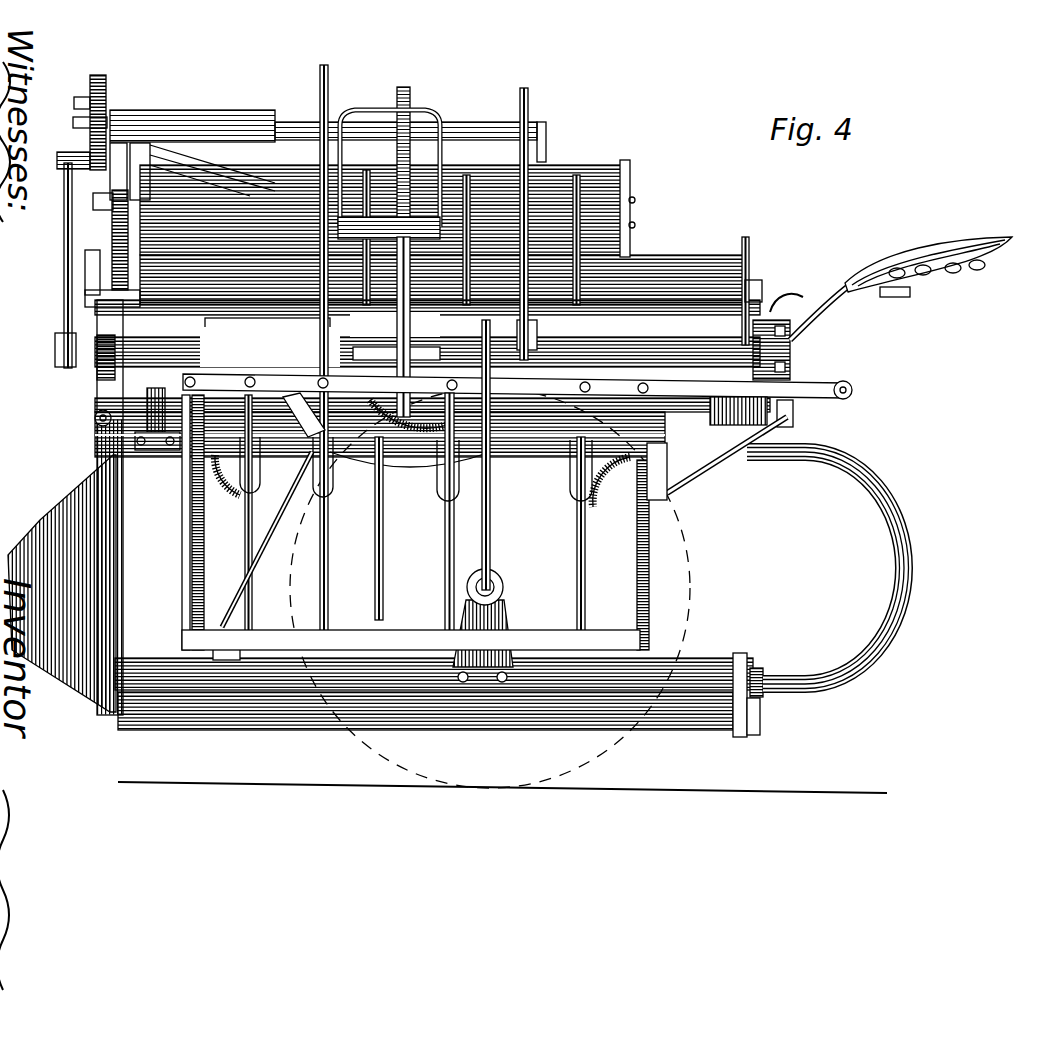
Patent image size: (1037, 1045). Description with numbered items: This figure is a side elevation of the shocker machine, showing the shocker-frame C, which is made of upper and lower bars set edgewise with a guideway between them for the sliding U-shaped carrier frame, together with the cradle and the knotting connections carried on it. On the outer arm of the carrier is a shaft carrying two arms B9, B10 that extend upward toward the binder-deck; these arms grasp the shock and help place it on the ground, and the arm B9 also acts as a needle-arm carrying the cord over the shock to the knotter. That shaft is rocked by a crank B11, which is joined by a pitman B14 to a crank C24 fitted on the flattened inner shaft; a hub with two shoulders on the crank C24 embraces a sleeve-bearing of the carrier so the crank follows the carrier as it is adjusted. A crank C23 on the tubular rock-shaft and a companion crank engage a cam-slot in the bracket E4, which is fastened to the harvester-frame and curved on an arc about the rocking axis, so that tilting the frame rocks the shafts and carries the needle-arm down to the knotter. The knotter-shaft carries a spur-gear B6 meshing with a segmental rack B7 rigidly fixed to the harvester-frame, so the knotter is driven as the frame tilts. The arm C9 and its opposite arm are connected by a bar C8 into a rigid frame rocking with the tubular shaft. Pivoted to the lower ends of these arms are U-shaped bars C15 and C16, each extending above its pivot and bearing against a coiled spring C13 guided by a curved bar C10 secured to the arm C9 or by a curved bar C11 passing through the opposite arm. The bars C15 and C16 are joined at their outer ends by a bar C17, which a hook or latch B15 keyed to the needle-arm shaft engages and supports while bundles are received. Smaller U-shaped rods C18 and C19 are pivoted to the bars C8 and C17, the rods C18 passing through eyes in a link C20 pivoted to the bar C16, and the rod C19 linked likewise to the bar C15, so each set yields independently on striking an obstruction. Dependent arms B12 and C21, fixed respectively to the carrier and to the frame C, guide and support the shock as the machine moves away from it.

The arm B10 is at (328, 86).
The needle-arm B9 is at (530, 105).
The crank B11 is at (748, 288).
The pitman B14 is at (770, 310).
The shocker-frame C is at (792, 348).
The hook or latch B15 is at (353, 353).
The crank C23 is at (287, 400).
The spur-gear B6 is at (410, 381).
The bar C17 is at (542, 388).
The crank C24 is at (730, 415).
The arm C9 is at (790, 419).
The bracket E4 is at (392, 460).
The segmental rack B7 is at (413, 425).
The bar C8 is at (503, 564).
The dependent arm B12 is at (490, 500).
The U-shaped bar C15 is at (607, 467).
The curved bar C10 is at (593, 507).
The coiled spring C13 is at (223, 478).
The curved bar C11 is at (235, 500).
The U-shaped bar C16 is at (180, 538).
The dependent arm C21 is at (378, 520).
The U-shaped rod C18 is at (318, 572).
The U-shaped rod C19 is at (578, 542).
The link C20 is at (367, 637).